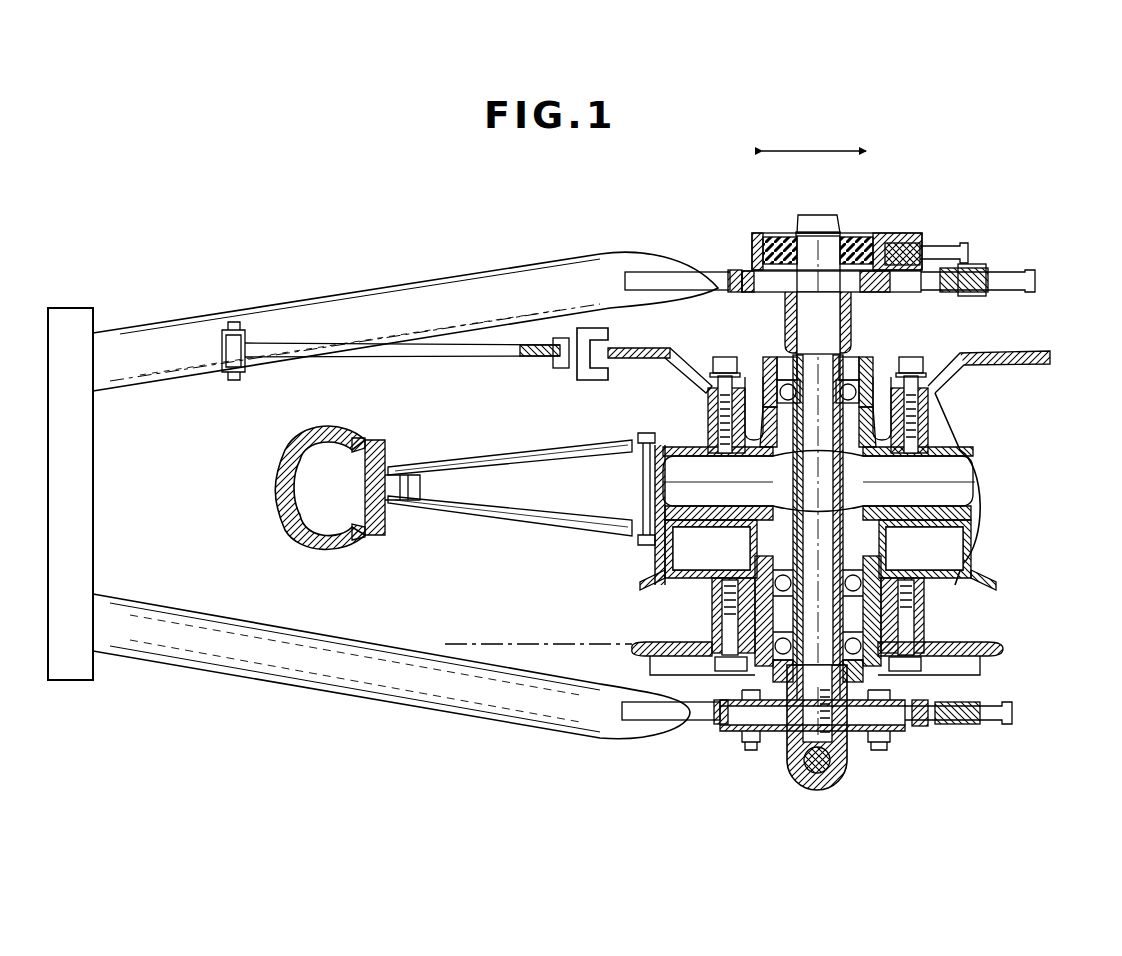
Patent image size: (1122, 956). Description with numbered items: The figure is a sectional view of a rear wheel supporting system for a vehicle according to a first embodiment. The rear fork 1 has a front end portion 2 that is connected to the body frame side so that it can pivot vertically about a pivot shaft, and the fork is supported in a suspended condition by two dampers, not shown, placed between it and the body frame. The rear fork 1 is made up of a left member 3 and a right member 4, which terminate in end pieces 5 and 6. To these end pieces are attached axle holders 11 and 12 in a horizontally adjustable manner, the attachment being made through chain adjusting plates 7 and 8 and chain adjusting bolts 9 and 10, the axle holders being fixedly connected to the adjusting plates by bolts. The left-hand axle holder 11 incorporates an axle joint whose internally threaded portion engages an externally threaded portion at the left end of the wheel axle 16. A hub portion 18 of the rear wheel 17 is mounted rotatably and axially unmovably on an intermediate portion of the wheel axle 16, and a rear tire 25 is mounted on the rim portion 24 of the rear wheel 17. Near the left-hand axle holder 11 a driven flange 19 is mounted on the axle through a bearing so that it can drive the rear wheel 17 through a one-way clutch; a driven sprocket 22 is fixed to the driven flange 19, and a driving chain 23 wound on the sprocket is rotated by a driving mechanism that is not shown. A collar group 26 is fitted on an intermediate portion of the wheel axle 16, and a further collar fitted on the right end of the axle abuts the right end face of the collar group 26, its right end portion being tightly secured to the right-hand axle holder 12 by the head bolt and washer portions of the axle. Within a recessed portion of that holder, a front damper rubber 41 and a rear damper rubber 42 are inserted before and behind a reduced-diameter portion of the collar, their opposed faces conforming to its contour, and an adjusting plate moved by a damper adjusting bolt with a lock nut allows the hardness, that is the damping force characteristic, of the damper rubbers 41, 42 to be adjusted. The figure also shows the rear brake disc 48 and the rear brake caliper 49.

The rear fork 1 is at (165, 318).
The front end portion 2 is at (95, 480).
The left member 3 is at (415, 696).
The right member 4 is at (336, 308).
The end piece 5 is at (724, 726).
The end piece 6 is at (680, 274).
The chain adjusting plate 7 is at (920, 708).
The chain adjusting plate 8 is at (955, 297).
The chain adjusting bolt 9 is at (1014, 715).
The chain adjusting bolt 10 is at (1035, 281).
The axle holder 11 is at (860, 740).
The axle holder 12 is at (918, 245).
The wheel axle 16 is at (975, 470).
The rear wheel 17 is at (524, 456).
The hub portion 18 is at (708, 416).
The driven flange 19 is at (714, 605).
The driven sprocket 22 is at (648, 640).
The driving chain 23 is at (522, 640).
The rim portion 24 is at (378, 440).
The rear tire 25 is at (320, 428).
The collar group 26 is at (996, 490).
The front damper rubber 41 is at (779, 240).
The rear damper rubber 42 is at (858, 240).
The rear brake disc 48 is at (643, 347).
The rear brake caliper 49 is at (578, 328).